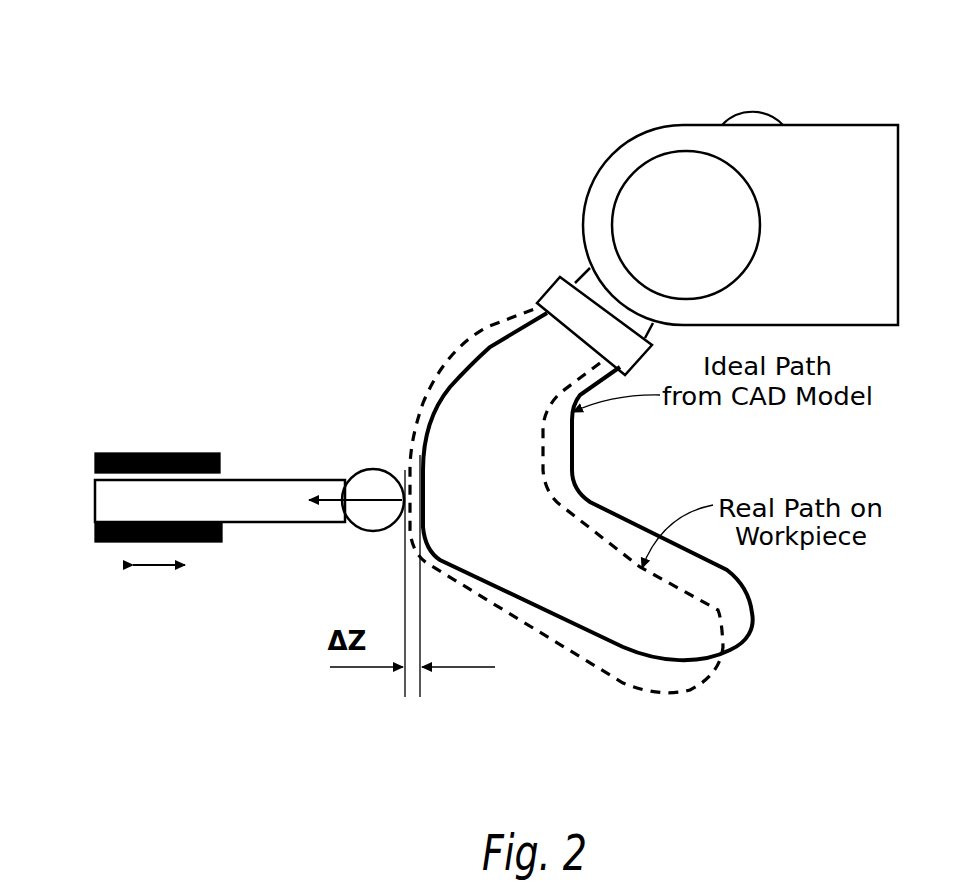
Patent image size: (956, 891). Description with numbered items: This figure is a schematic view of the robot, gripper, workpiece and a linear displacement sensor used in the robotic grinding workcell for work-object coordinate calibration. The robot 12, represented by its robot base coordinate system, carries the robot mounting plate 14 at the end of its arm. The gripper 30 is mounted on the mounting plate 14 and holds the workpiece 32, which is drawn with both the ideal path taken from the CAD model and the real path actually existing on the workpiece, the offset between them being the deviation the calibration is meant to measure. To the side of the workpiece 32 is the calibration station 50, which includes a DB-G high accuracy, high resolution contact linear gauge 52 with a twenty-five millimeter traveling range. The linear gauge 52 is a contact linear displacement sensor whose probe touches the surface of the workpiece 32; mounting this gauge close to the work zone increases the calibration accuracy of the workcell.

The robot 12 is at (830, 145).
The robot mounting plate 14 is at (580, 268).
The gripper 30 is at (548, 287).
The workpiece 32 is at (510, 370).
The calibration station 50 is at (249, 558).
The linear gauge 52 is at (270, 477).